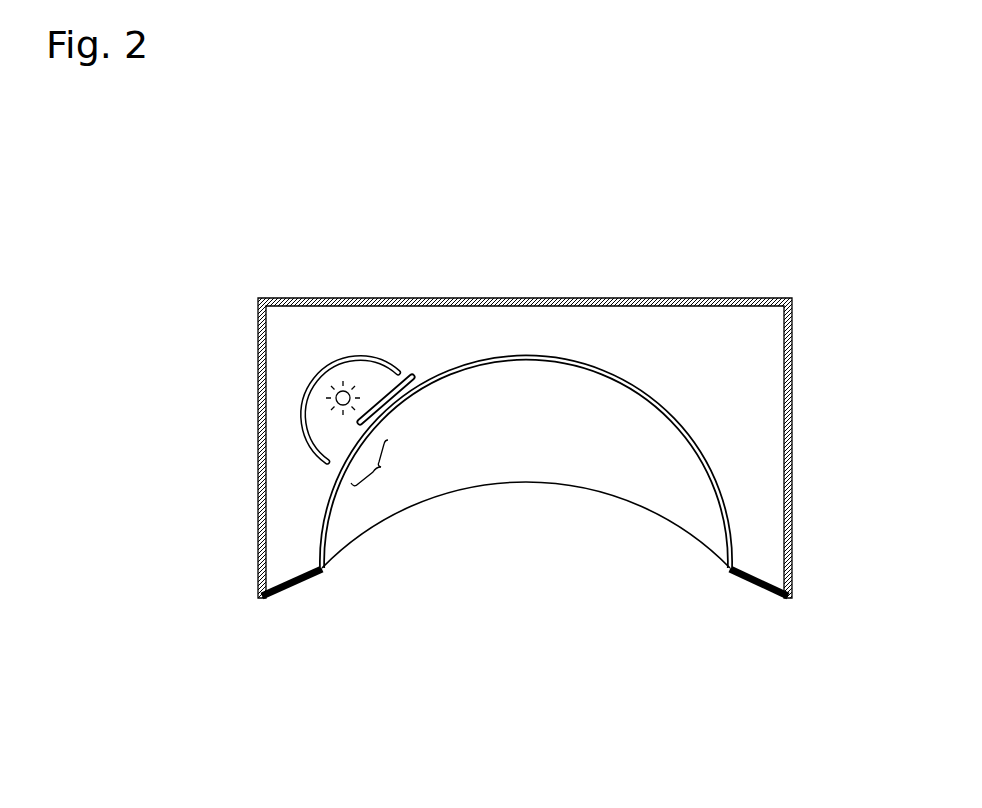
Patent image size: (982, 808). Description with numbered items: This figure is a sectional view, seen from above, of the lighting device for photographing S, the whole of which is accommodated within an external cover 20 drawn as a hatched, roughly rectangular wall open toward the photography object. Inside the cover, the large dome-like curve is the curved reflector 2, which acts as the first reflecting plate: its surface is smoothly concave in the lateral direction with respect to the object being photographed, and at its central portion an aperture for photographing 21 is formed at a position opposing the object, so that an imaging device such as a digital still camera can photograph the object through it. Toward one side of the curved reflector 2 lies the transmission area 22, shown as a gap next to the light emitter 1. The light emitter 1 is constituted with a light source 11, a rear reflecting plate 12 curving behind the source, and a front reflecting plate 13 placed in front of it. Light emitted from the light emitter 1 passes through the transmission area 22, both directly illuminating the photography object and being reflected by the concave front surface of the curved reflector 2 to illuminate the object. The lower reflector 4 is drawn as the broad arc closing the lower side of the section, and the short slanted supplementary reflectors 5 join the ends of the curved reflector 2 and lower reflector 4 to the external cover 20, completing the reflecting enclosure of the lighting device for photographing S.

The light emitter 1 is at (322, 341).
The light source 11 is at (343, 357).
The rear reflecting plate 12 is at (304, 403).
The front reflecting plate 13 is at (413, 377).
The curved reflector 2 is at (703, 453).
The aperture for photographing 21 is at (542, 356).
The transmission area 22 is at (381, 467).
The external cover 20 is at (793, 350).
The lower reflector 4 is at (543, 632).
The supplementary reflectors 5 is at (292, 590).
The lighting device for photographing S is at (521, 235).